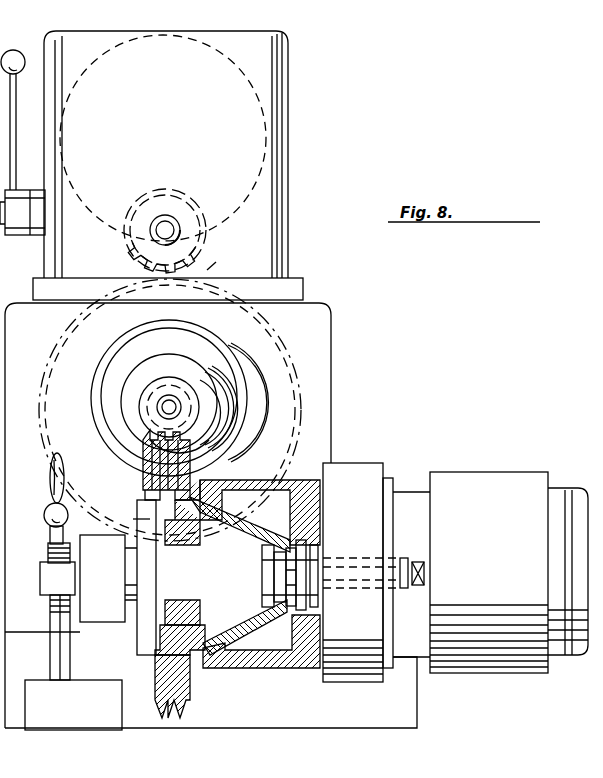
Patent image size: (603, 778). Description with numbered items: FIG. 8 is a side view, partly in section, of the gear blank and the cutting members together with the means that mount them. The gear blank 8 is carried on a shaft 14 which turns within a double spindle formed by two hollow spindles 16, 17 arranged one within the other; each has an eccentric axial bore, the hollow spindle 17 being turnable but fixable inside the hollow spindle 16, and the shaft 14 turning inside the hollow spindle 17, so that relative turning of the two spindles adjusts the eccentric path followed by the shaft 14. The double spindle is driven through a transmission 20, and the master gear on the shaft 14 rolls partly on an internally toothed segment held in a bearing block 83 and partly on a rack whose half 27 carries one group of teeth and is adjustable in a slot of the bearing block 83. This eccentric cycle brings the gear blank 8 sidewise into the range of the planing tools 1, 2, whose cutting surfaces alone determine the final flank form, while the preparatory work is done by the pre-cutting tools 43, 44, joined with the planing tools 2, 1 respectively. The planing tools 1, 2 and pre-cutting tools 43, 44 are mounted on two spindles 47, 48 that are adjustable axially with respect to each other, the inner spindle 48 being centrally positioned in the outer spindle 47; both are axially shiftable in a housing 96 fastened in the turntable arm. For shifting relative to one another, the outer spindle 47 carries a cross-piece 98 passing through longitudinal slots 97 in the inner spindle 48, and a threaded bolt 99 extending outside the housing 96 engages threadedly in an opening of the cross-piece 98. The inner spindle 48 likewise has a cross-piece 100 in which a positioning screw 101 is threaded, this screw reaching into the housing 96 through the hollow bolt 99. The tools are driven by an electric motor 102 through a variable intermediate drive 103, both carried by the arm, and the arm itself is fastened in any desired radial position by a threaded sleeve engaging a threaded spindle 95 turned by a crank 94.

The planing tool 1 is at (142, 452).
The planing tool 2 is at (190, 455).
The gear blank 8 is at (188, 397).
The shaft 14 is at (183, 413).
The hollow spindle 16 is at (203, 350).
The hollow spindle 17 is at (192, 370).
The transmission 20 is at (263, 196).
The rack half 27 is at (200, 244).
The pre-cutting tool 43 is at (148, 433).
The pre-cutting tool 44 is at (198, 440).
The outer spindle 47 is at (242, 516).
The inner spindle 48 is at (118, 612).
The bearing block 83 is at (312, 332).
The crank 94 is at (55, 482).
The threaded spindle 95 is at (60, 668).
The housing 96 is at (258, 660).
The longitudinal slots 97 is at (284, 614).
The cross-piece 98 is at (312, 598).
The threaded bolt 99 is at (405, 555).
The cross-piece 100 is at (262, 582).
The positioning screw 101 is at (425, 571).
The electric motor 102 is at (500, 665).
The variable intermediate drive 103 is at (365, 672).